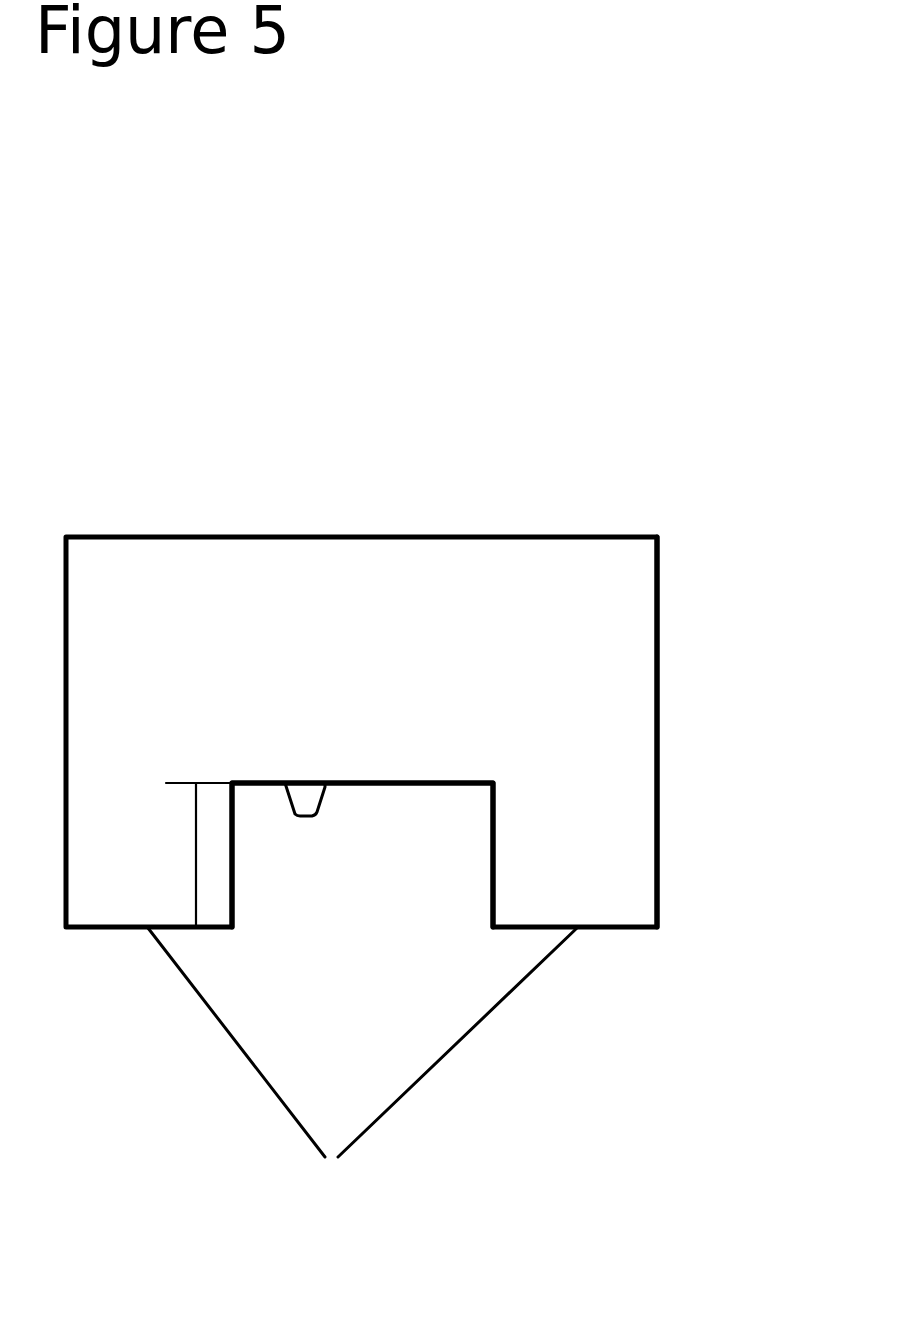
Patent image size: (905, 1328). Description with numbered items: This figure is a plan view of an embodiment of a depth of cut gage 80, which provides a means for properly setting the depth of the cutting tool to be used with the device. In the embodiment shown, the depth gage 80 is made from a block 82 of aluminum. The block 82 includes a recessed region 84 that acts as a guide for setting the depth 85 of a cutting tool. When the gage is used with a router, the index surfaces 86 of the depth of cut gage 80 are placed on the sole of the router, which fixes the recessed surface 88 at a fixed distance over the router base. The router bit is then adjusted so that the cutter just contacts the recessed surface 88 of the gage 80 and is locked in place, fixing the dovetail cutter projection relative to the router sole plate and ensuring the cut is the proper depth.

The depth of cut gage 80 is at (262, 531).
The block 82 is at (590, 667).
The recessed region 84 is at (371, 820).
The depth 85 is at (194, 860).
The index surfaces 86 is at (362, 1101).
The recessed surface 88 is at (287, 790).